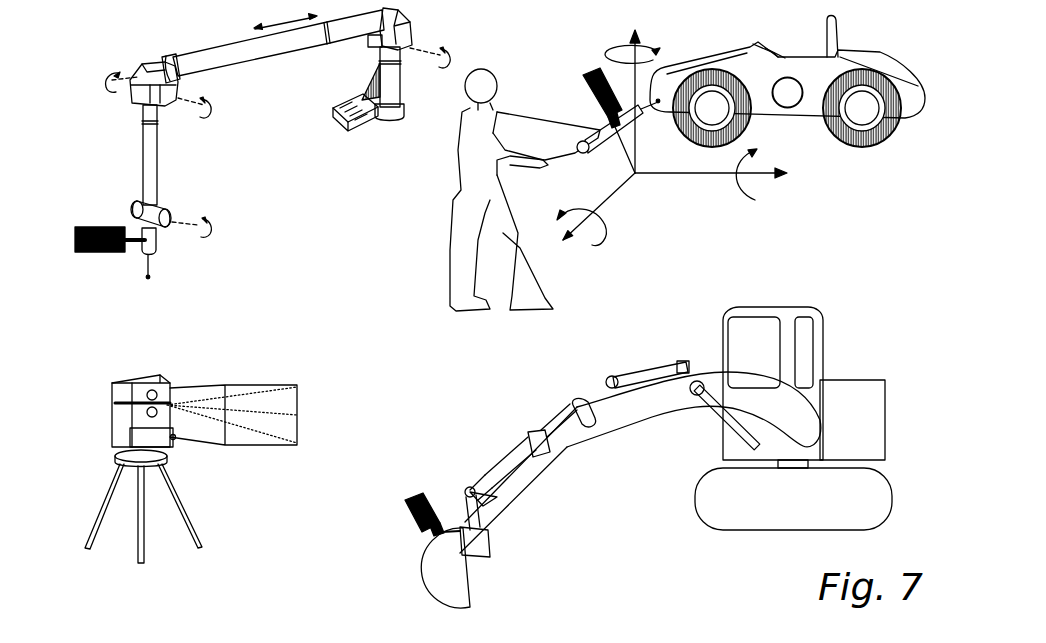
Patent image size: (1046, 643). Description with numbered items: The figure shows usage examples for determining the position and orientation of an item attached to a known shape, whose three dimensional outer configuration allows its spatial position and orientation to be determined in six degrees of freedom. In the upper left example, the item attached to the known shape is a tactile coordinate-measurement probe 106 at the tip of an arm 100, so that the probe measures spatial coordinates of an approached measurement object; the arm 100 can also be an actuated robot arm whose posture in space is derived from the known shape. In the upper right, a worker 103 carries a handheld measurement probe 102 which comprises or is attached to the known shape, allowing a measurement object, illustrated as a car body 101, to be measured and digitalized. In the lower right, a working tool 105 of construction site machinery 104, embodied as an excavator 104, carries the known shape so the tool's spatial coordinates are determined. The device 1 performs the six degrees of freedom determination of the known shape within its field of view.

The six degrees of freedom spatial position and orientation determination device 1 is at (122, 383).
The articulated measuring arm 100 is at (365, 150).
The car body 101 is at (862, 155).
The handheld measurement probe 102 is at (635, 173).
The worker 103 is at (512, 255).
The construction site machinery (excavator) 104 is at (682, 478).
The working tool 105 is at (432, 567).
The tactile coordinate-measurement probe 106 is at (150, 263).